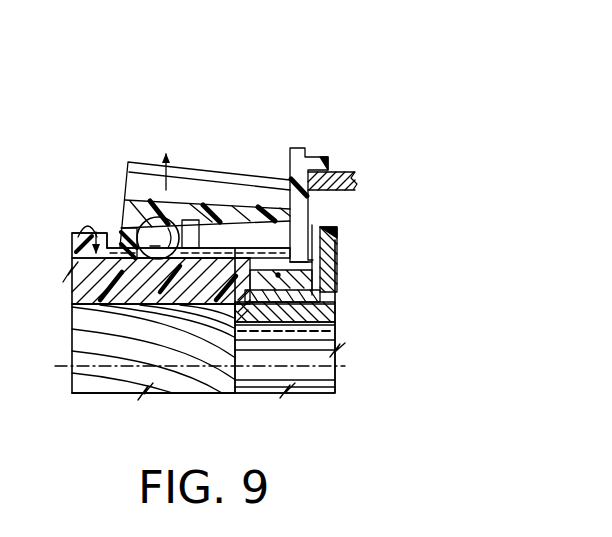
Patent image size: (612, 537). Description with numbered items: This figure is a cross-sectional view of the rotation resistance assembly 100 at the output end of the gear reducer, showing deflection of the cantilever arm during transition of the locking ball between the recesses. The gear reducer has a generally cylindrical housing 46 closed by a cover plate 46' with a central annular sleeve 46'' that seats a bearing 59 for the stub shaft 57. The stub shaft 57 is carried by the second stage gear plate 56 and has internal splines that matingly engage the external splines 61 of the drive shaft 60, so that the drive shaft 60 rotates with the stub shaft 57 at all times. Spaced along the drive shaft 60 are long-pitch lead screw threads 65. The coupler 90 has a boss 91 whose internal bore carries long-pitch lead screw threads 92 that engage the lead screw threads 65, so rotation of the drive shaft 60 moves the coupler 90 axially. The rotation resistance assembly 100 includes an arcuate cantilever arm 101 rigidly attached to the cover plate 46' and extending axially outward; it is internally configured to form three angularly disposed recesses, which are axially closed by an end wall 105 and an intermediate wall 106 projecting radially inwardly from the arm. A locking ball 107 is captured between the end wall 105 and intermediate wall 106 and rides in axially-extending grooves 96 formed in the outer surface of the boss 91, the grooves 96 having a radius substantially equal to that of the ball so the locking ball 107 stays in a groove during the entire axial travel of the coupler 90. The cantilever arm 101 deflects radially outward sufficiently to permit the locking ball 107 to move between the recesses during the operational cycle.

The rotation resistance assembly 100 is at (174, 149).
The arcuate cantilever arm 101 is at (130, 178).
The end wall 105 is at (137, 238).
The intermediate wall 106 is at (190, 228).
The locking ball 107 is at (152, 232).
The axially-extending grooves 96 is at (217, 252).
The housing 46 is at (352, 149).
The cover plate 46' is at (314, 169).
The central annular sleeve 46'' is at (368, 259).
The second stage gear plate 56 is at (328, 232).
The stub shaft 57 is at (290, 312).
The bearing 59 is at (300, 292).
The drive shaft 60 is at (105, 394).
The external splines 61 is at (315, 380).
The long-pitch lead screw threads 65 is at (178, 380).
The coupler 90 is at (70, 253).
The boss 91 is at (125, 286).
The long-pitch lead screw threads 92 is at (82, 322).